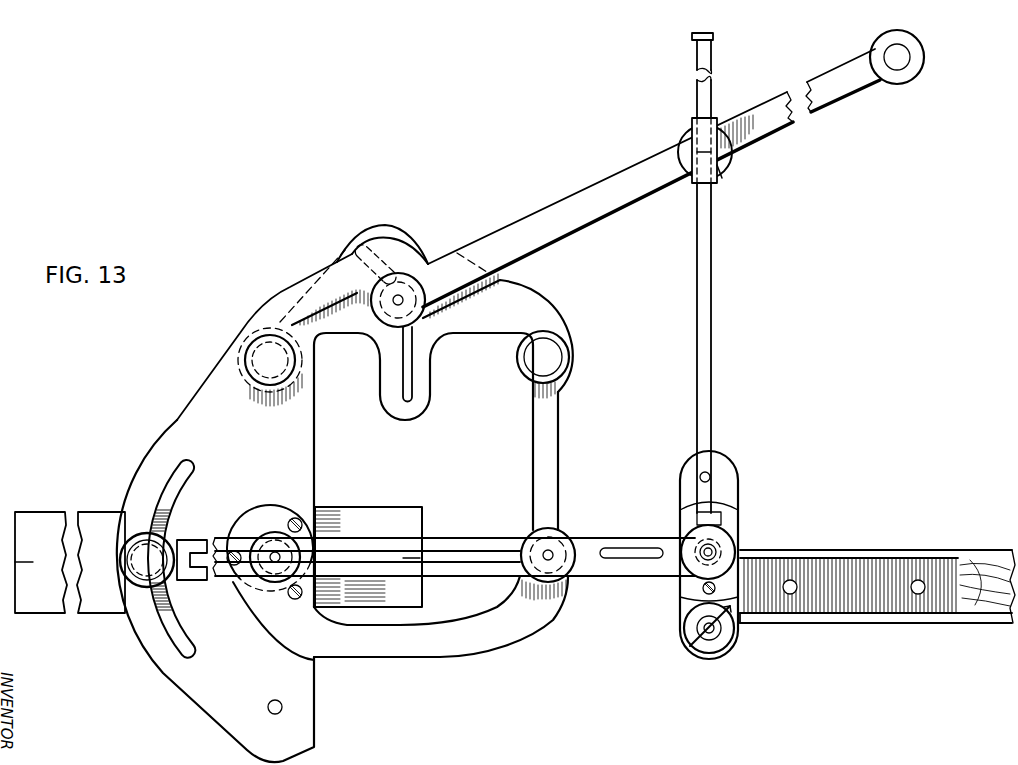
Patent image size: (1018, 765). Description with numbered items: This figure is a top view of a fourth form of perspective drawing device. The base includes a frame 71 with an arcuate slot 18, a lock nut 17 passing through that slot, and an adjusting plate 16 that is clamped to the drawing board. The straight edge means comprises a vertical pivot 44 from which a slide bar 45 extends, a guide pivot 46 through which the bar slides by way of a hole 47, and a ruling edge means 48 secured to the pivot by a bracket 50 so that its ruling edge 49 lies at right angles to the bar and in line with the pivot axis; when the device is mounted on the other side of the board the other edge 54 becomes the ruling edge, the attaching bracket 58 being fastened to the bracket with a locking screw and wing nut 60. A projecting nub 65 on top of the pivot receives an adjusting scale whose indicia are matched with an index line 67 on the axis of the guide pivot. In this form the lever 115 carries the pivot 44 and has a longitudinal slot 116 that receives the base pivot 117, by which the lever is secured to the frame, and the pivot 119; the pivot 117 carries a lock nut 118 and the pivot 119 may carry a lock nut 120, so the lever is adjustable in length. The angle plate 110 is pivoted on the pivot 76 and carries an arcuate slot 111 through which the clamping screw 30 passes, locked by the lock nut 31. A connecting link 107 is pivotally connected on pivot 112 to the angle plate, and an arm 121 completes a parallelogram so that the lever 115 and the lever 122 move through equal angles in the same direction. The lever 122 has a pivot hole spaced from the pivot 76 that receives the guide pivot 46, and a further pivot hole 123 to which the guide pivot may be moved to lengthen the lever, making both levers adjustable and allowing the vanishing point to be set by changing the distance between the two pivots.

The adjusting plate 16 is at (42, 526).
The lock nut 17 is at (143, 552).
The arcuate slot 18 is at (173, 631).
The clamping screw 30 is at (352, 253).
The lock nut 31 is at (403, 288).
The vertical pivot 44 is at (723, 547).
The bar 45 is at (706, 327).
The guide pivot 46 is at (722, 162).
The hole 47 is at (720, 172).
The ruling edge means 48 is at (987, 613).
The ruling edge 49 is at (876, 550).
The bracket 50 is at (692, 607).
The other edge 54 is at (902, 627).
The attaching bracket 58 is at (790, 600).
The wing nut 60 is at (718, 642).
The projecting nub 65 is at (702, 558).
The index line 67 is at (697, 133).
The frame 71 is at (190, 437).
The pivot 76 is at (243, 335).
The connecting link 107 is at (550, 467).
The angle plate 110 is at (530, 308).
The arcuate slot 111 is at (413, 387).
The pivot 112 is at (553, 362).
The lever 115 is at (625, 540).
The longitudinal slot 116 is at (457, 556).
The base pivot 117 is at (277, 553).
The lock nut 118 is at (263, 547).
The pivot 119 is at (537, 556).
The lock nut 120 is at (532, 537).
The arm 121 is at (473, 640).
The lever 122 is at (562, 216).
The pivot hole 123 is at (908, 63).